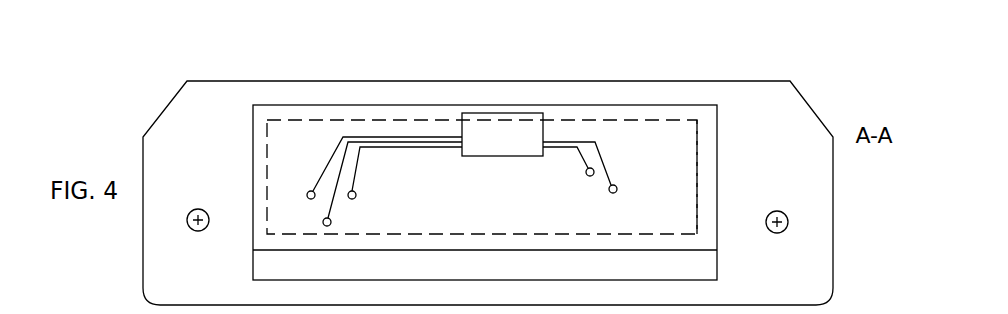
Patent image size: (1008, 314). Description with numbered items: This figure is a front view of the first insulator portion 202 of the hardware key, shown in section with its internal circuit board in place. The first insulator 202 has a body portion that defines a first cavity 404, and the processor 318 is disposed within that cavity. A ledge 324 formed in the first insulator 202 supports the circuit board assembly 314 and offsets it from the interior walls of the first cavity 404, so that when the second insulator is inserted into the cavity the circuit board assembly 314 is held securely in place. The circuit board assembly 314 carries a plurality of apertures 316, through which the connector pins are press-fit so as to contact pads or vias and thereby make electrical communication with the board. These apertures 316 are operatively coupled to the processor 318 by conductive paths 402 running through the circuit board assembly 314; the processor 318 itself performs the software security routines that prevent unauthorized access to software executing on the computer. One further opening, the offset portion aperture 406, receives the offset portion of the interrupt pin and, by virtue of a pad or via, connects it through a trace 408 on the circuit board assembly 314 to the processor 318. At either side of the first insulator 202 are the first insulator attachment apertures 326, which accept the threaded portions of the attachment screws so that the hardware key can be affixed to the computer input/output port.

The first insulator portion 202 is at (155, 120).
The circuit board assembly 314 is at (252, 122).
The apertures 316 is at (306, 194).
The processor 318 is at (490, 157).
The ledge 324 is at (288, 112).
The first insulator attachment apertures 326 is at (785, 212).
The conductive paths 402 is at (412, 147).
The first cavity 404 is at (683, 137).
The offset portion aperture 406 is at (588, 177).
The trace 408 is at (565, 147).